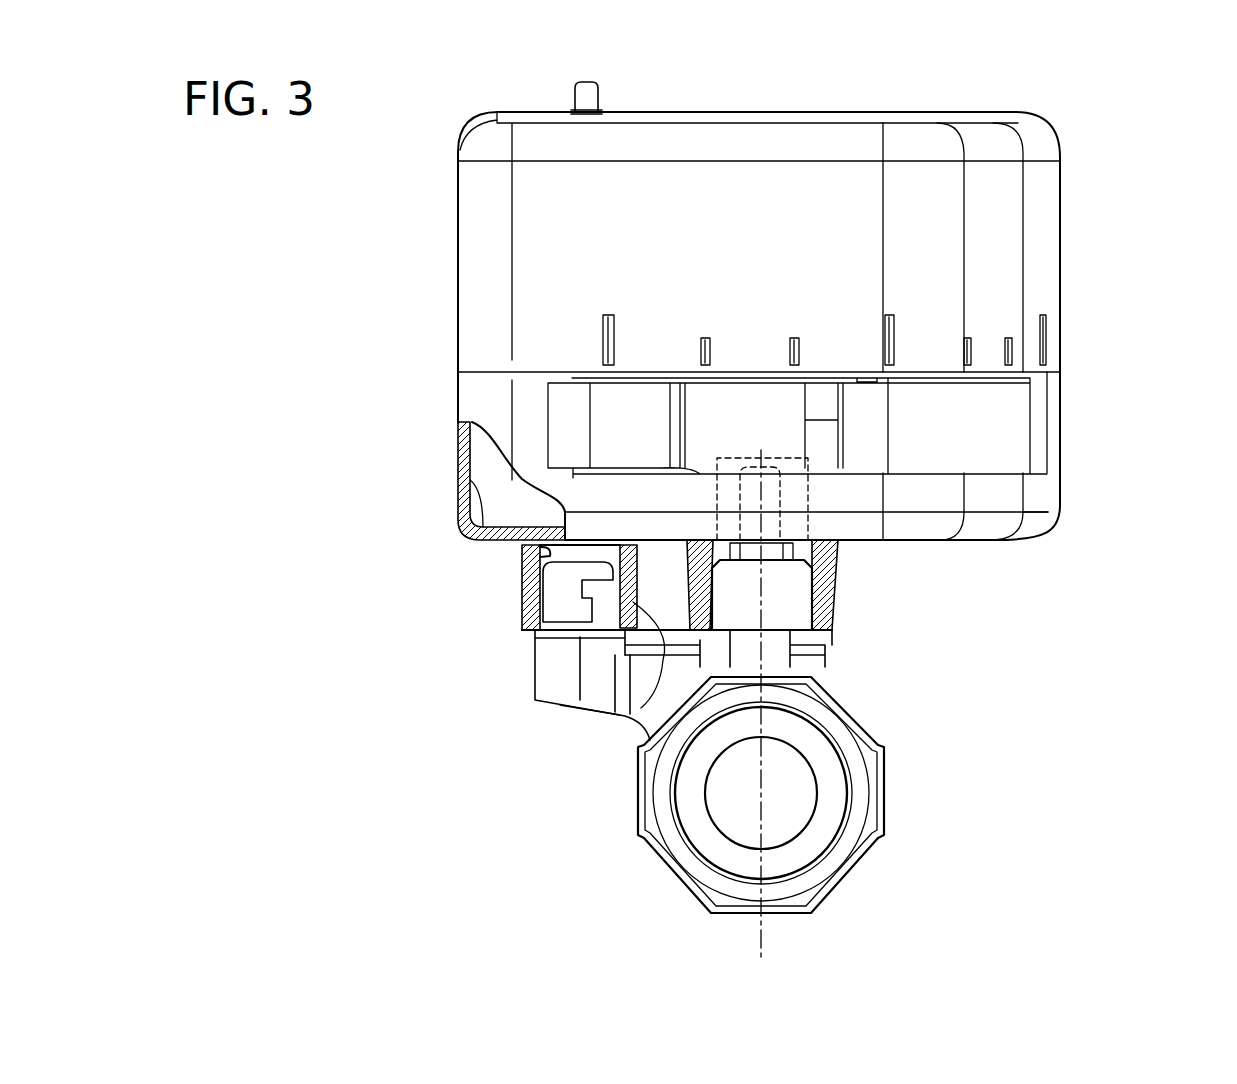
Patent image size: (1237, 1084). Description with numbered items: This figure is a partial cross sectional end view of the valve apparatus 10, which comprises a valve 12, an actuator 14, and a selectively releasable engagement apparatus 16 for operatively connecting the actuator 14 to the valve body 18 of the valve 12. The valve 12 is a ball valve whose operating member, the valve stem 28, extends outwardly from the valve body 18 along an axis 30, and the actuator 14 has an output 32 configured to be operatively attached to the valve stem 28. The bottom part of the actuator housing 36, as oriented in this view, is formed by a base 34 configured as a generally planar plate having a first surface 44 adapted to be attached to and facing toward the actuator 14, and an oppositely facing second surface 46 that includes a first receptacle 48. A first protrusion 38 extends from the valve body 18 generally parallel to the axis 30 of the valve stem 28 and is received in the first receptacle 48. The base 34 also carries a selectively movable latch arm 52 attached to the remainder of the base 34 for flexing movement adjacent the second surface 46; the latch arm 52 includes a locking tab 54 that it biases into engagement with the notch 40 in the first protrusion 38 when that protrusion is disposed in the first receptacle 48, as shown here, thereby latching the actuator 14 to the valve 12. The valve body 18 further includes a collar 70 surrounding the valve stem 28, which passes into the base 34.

The valve apparatus 10 is at (1118, 358).
The valve 12 is at (882, 795).
The actuator 14 is at (470, 198).
The selectively releasable engagement apparatus 16 is at (920, 645).
The valve body 18 is at (645, 757).
The valve stem 28 is at (755, 490).
The axis 30 is at (768, 940).
The output 32 is at (808, 500).
The base 34 is at (1045, 495).
The actuator housing 36 is at (1040, 252).
The first protrusion 38 is at (560, 613).
The notch 40 is at (595, 655).
The first surface 44 is at (458, 476).
The second surface 46 is at (990, 543).
The first receptacle 48 is at (528, 564).
The latch arm 52 is at (620, 715).
The locking tab 54 is at (590, 597).
The collar 70 is at (790, 612).